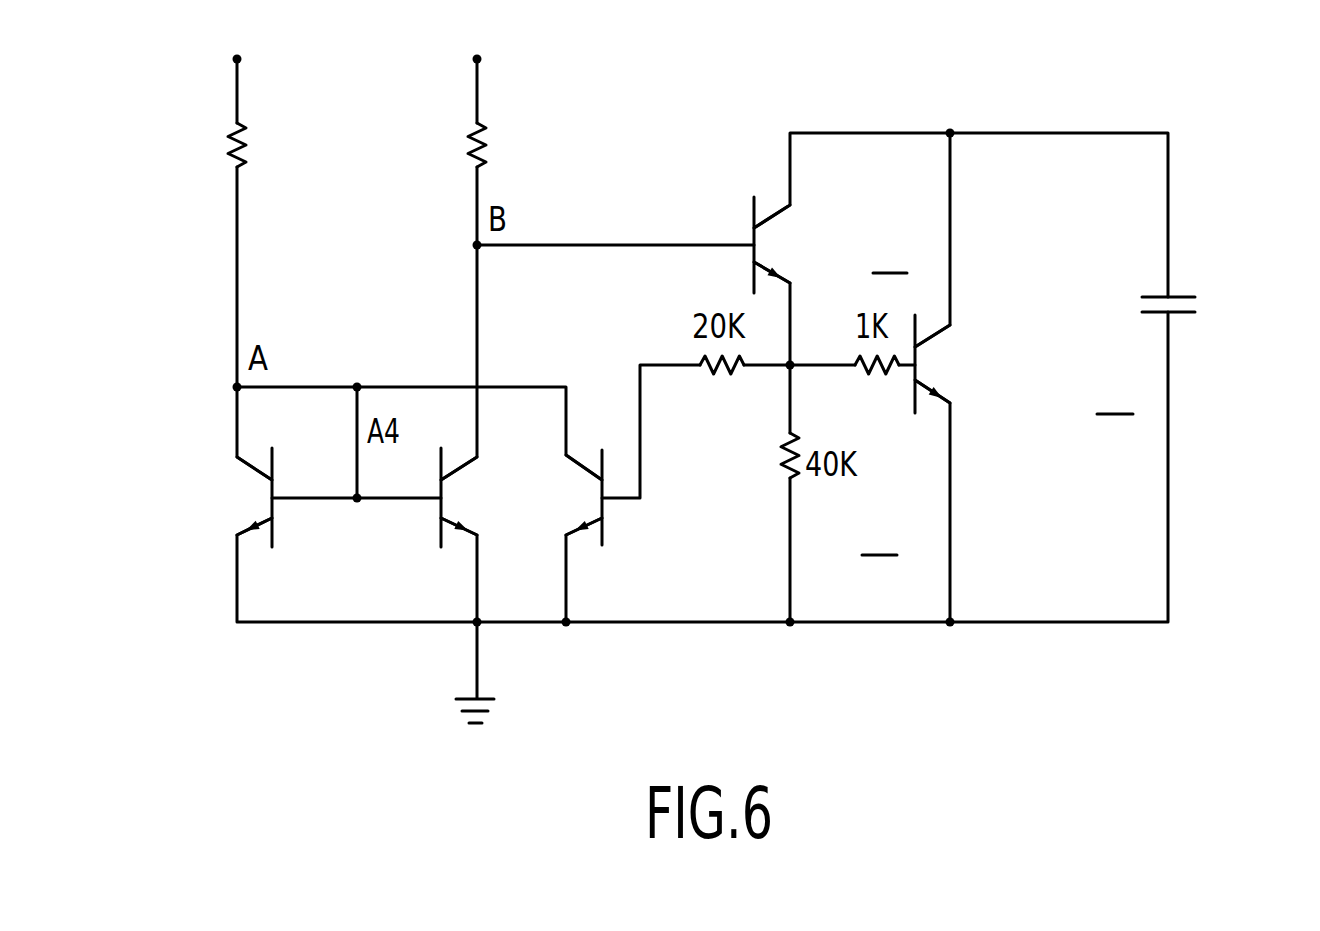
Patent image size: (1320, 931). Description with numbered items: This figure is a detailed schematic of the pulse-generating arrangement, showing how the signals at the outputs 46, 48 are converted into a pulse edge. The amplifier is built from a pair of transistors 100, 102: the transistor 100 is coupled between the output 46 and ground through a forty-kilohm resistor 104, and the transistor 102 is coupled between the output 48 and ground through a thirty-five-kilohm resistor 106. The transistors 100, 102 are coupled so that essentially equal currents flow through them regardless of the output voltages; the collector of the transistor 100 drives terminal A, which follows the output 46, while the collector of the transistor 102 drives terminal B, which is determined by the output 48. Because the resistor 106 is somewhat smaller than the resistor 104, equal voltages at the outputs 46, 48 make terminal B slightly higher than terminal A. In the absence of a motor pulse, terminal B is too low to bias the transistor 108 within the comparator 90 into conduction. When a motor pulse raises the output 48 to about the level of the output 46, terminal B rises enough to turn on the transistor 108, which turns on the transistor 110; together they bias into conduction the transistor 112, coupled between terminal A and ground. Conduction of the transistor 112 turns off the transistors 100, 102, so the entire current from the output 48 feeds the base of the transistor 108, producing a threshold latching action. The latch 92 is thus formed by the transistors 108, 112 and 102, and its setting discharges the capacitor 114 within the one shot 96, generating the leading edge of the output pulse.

The output 46 is at (237, 59).
The output 48 is at (477, 59).
The comparator 90 is at (890, 255).
The latch 92 is at (879, 534).
The one shot 96 is at (1115, 394).
The transistor 100 is at (273, 535).
The transistor 102 is at (438, 544).
The 40K ohm resistor 104 is at (232, 163).
The 35K ohm resistor 106 is at (472, 163).
The transistor 108 is at (752, 210).
The transistor 110 is at (913, 401).
The transistor 112 is at (603, 544).
The capacitor 114 is at (1193, 314).